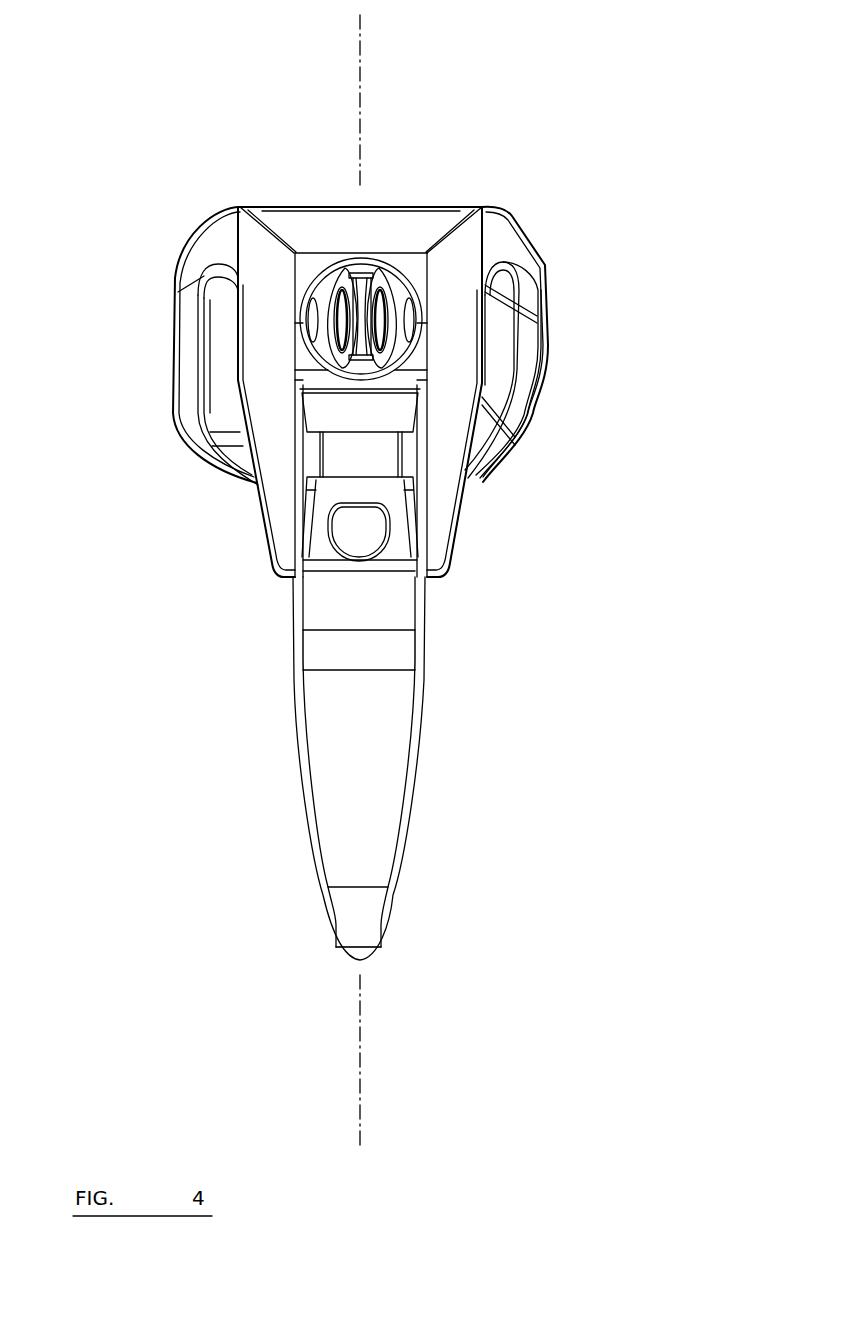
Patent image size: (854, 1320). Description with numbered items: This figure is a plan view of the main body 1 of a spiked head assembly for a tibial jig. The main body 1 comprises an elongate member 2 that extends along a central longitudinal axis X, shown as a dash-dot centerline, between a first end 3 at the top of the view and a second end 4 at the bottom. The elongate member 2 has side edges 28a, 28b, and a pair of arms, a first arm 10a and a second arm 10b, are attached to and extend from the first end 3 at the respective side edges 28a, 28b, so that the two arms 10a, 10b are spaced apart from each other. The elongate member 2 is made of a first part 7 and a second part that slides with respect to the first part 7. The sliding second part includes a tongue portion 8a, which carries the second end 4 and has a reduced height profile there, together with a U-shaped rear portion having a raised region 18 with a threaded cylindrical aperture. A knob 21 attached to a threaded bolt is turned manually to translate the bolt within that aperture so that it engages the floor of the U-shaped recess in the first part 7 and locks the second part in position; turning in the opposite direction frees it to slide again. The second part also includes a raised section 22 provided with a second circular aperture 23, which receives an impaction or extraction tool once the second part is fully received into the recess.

The central longitudinal axis X is at (360, 80).
The main body 1 is at (590, 222).
The elongate member 2 is at (262, 533).
The first end 3 is at (398, 208).
The second end 4 is at (368, 958).
The first part 7 is at (437, 513).
The tongue portion 8a is at (373, 805).
The first arm 10a is at (530, 373).
The second arm 10b is at (190, 386).
The raised region 18 is at (300, 347).
The knob 21 is at (323, 310).
The raised section 22 is at (388, 605).
The second circular aperture 23 is at (355, 538).
The side edge 28a is at (428, 648).
The side edge 28b is at (300, 653).